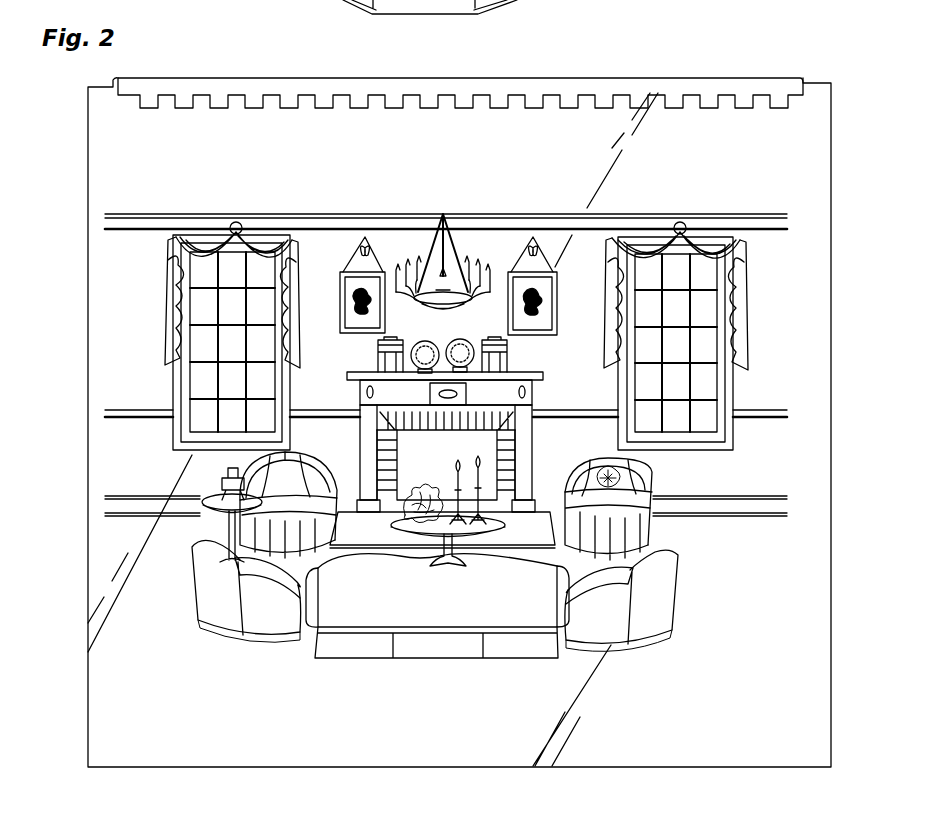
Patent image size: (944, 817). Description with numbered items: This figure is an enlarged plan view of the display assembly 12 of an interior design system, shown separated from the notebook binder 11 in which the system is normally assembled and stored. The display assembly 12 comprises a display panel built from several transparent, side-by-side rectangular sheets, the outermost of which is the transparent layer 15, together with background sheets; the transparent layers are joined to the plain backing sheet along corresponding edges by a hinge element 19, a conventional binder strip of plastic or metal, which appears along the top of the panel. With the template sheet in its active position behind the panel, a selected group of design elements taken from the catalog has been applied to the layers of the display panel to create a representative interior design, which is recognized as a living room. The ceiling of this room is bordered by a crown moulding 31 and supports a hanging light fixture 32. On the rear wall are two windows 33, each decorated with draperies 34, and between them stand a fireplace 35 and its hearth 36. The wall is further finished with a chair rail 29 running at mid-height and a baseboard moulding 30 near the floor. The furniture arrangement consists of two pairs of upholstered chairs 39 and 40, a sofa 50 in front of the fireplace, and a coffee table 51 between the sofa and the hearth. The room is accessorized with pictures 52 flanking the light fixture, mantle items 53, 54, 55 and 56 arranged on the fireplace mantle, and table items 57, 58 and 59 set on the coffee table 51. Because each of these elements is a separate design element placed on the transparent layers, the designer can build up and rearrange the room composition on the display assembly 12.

The notebook binder 11 is at (620, 0).
The display assembly 12 is at (82, 523).
The transparent layer 15 is at (818, 194).
The hinge element 19 is at (300, 80).
The chair rail 29 is at (598, 428).
The baseboard moulding 30 is at (757, 498).
The crown moulding 31 is at (488, 216).
The hanging light fixture 32 is at (457, 263).
The window 33 is at (275, 392).
The draperies 34 is at (172, 313).
The fireplace 35 is at (545, 413).
The hearth 36 is at (372, 532).
The upholstered chair 39 is at (297, 468).
The upholstered chair 40 is at (255, 628).
The sofa 50 is at (455, 607).
The coffee table 51 is at (497, 532).
The pictures 52 is at (352, 275).
The mantle item 53 is at (378, 355).
The mantle item 54 is at (430, 343).
The mantle item 55 is at (447, 348).
The mantle item 56 is at (505, 363).
The table item 57 is at (440, 490).
The table item 58 is at (455, 468).
The table item 59 is at (483, 447).